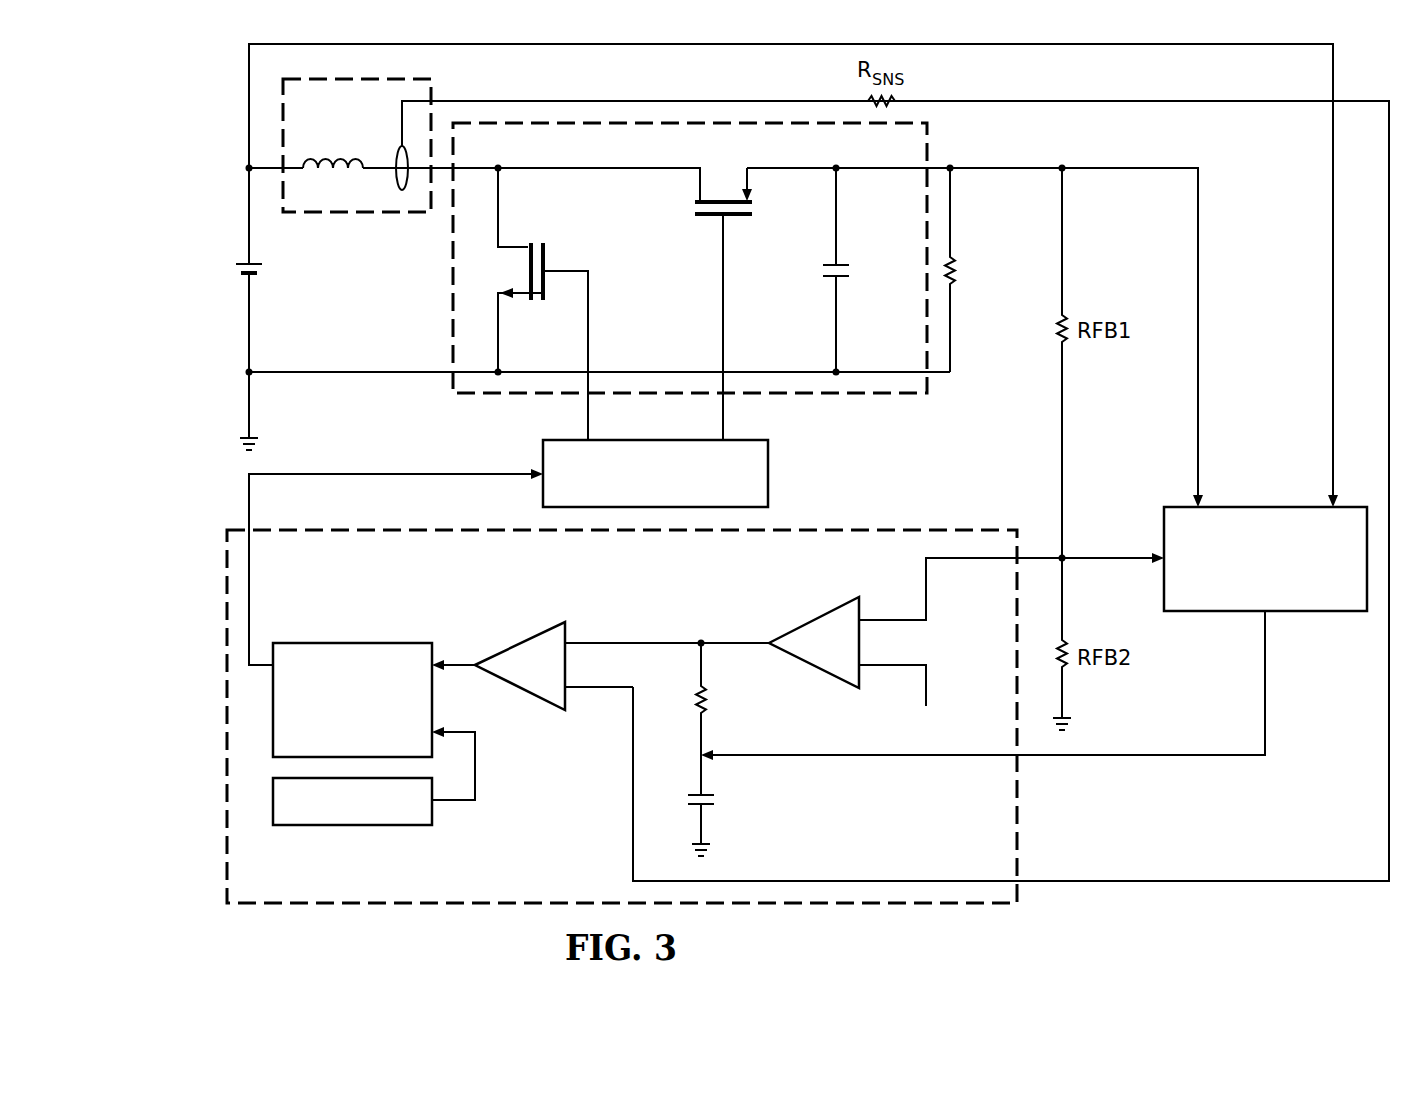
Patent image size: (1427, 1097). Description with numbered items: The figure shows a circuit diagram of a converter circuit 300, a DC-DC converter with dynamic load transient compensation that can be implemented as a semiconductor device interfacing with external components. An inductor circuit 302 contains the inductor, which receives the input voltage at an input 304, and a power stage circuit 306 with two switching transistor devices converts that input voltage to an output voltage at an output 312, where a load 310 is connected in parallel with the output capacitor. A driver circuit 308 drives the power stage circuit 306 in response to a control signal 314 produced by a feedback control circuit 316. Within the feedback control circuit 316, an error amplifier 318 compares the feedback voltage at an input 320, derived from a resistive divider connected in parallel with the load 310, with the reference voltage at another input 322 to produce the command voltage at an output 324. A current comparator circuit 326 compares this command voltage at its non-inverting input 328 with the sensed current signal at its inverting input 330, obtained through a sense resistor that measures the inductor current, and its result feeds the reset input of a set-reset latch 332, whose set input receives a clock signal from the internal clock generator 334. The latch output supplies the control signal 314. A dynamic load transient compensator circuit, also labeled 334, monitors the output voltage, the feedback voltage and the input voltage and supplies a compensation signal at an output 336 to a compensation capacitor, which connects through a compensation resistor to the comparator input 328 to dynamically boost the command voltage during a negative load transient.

The converter circuit 300 is at (207, 90).
The inductor circuit 302 is at (339, 224).
The input 304 is at (236, 270).
The power stage circuit 306 is at (441, 292).
The driver circuit 308 is at (768, 459).
The load 310 is at (955, 272).
The output 312 is at (1130, 168).
The control signal 314 is at (430, 472).
The feedback control circuit 316 is at (216, 818).
The error amplifier 318 is at (812, 617).
The input 320 is at (1040, 556).
The input 322 is at (928, 690).
The output 324 is at (735, 642).
The current comparator circuit 326 is at (520, 642).
The non-inverting input 328 is at (598, 642).
The inverting input 330 is at (633, 786).
The set-reset latch 332 is at (352, 642).
The internal clock generator 334 is at (352, 826).
The output 336 is at (1265, 682).